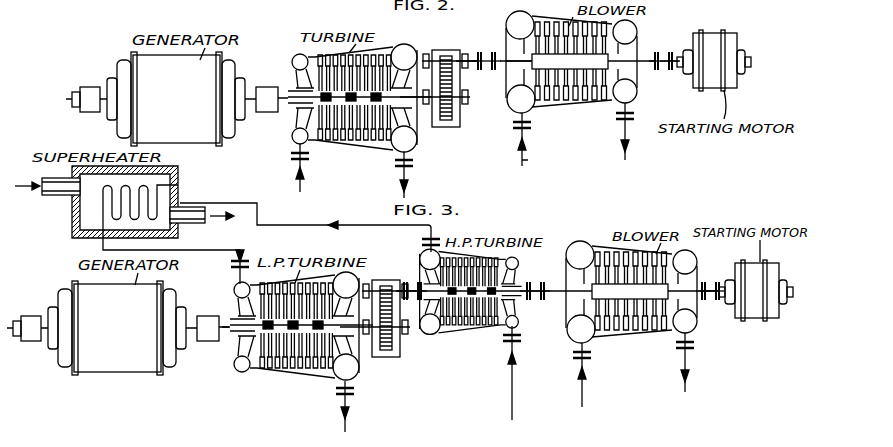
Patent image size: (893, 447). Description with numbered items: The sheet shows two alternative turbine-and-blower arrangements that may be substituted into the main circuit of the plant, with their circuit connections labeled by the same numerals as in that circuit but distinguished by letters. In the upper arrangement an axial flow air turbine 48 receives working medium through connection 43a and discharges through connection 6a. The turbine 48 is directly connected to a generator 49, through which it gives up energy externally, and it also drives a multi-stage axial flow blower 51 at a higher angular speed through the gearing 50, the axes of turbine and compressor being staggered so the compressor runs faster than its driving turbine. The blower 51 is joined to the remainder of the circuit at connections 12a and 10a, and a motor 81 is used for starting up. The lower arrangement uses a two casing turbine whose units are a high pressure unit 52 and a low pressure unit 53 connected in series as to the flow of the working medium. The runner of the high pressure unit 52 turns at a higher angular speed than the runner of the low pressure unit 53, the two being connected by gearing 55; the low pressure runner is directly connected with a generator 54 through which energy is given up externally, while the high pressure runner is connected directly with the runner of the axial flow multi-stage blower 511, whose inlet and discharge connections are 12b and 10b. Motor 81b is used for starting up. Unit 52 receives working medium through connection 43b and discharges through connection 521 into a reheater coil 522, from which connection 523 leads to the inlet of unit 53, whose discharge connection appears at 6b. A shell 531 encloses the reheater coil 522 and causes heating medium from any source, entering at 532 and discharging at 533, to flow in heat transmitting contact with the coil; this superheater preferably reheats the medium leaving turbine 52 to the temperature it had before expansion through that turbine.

In FIG. 2, the generator 49 is at (187, 128).
In FIG. 2, the axial flow air turbine 48 is at (368, 143).
In FIG. 2, the gearing 50 is at (452, 58).
In FIG. 2, the multi-stage axial flow blower 51 is at (586, 105).
In FIG. 2, the motor 81 is at (715, 80).
In FIG. 2, the connection 43a is at (300, 176).
In FIG. 2, the connection 6a is at (412, 175).
In FIG. 2, the connection 12a is at (534, 141).
In FIG. 2, the connection 10a is at (638, 131).
In FIG. 3, the generator 54 is at (125, 358).
In FIG. 3, the low pressure unit 53 is at (306, 372).
In FIG. 3, the gearing 55 is at (393, 280).
In FIG. 3, the high pressure unit 52 is at (482, 328).
In FIG. 3, the axial flow multi-stage blower 511 is at (616, 334).
In FIG. 3, the motor 81b is at (761, 308).
In FIG. 3, the discharge connection 6b is at (355, 406).
In FIG. 3, the connection 43b is at (512, 400).
In FIG. 3, the inlet connection 12b is at (595, 375).
In FIG. 3, the discharge connection 10b is at (698, 362).
In FIG. 3, the connection 521 is at (310, 227).
In FIG. 3, the reheater coil 522 is at (178, 185).
In FIG. 3, the connection 523 is at (238, 248).
In FIG. 3, the shell 531 is at (72, 234).
In FIG. 3, the heating medium inlet 532 is at (68, 195).
In FIG. 3, the heating medium discharge 533 is at (193, 206).